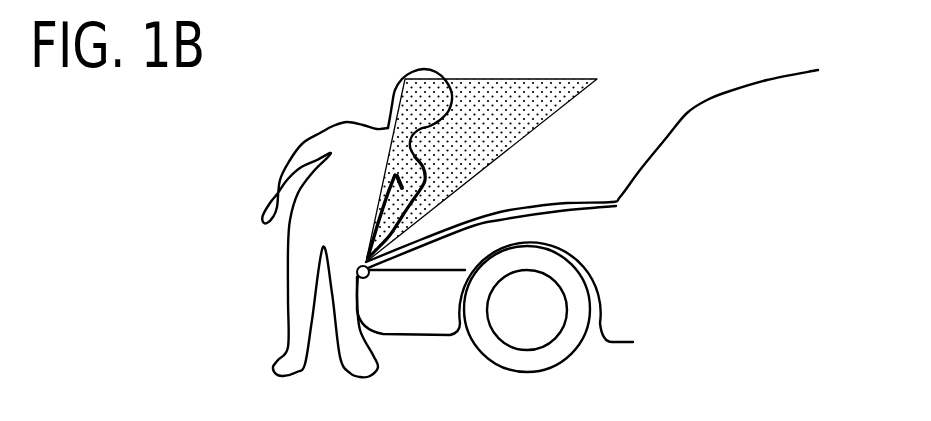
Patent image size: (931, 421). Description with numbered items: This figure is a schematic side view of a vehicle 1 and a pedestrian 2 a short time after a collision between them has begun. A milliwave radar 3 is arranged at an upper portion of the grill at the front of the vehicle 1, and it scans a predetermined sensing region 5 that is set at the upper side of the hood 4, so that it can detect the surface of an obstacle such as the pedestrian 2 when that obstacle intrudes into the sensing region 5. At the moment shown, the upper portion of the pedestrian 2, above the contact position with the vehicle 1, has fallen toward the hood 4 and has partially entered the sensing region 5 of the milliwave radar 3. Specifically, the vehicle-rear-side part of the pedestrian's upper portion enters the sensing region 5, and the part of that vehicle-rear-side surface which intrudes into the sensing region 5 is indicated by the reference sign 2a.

The vehicle 1 is at (682, 122).
The pedestrian 2 is at (290, 243).
The part of the vehicle-rear-side surface of the pedestrian upper portion 2a is at (405, 186).
The milliwave radar 3 is at (357, 271).
The hood 4 is at (567, 202).
The sensing region 5 is at (500, 86).